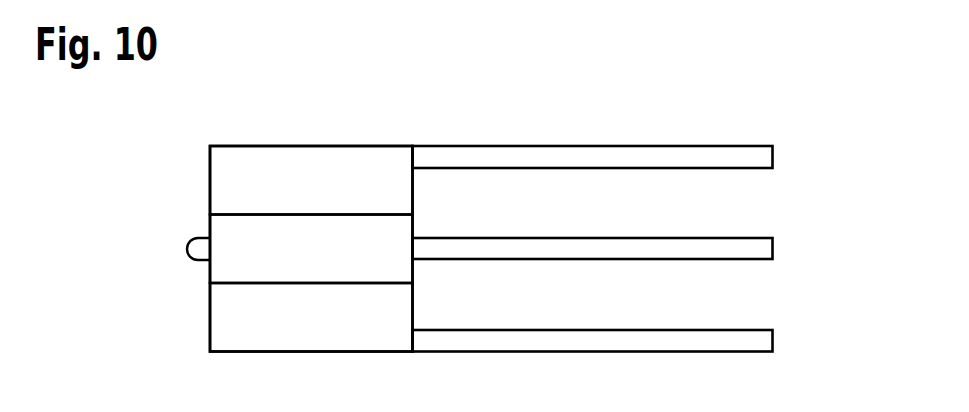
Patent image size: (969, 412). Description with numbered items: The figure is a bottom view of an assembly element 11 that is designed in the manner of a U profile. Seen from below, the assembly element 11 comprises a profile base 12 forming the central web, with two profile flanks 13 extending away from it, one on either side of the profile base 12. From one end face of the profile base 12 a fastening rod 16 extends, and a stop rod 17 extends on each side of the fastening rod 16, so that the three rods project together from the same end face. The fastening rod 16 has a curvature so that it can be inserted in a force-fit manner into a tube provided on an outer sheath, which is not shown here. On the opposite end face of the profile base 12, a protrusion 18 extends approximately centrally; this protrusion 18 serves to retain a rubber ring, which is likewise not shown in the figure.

The assembly element 11 is at (161, 183).
The profile base 12 is at (230, 272).
The profile flank 13 is at (302, 183).
The fastening rod 16 is at (759, 250).
The stop rod 17 is at (759, 160).
The protrusion 18 is at (202, 248).